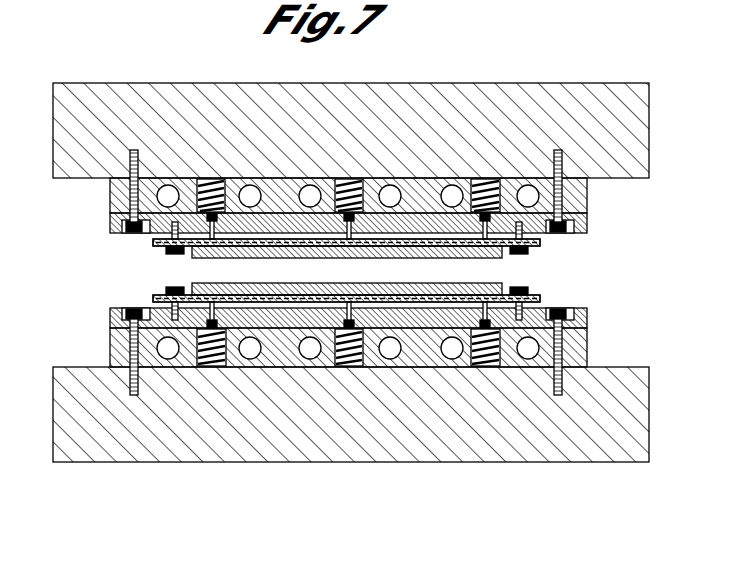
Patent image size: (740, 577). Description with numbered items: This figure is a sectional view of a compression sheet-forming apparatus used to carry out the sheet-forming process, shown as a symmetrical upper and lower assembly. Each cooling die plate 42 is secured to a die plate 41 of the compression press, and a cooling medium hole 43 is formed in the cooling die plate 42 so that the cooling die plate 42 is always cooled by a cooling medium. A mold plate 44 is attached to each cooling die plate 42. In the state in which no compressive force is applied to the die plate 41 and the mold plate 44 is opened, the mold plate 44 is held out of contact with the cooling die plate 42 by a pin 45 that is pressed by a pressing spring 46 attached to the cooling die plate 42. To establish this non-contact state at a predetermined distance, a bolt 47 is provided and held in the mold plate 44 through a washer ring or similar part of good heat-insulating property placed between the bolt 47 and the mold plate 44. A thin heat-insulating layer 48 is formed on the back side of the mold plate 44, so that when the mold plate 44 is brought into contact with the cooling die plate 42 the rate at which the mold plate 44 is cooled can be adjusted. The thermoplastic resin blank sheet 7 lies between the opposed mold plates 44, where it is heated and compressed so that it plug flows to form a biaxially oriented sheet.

The die plate 41 is at (538, 83).
The cooling die plate 42 is at (600, 197).
The cooling medium hole 43 is at (162, 186).
The mold plate 44 is at (488, 252).
The pin 45 is at (170, 255).
The pressing spring 46 is at (352, 180).
The bolt 47 is at (592, 222).
The thin heat-insulating layer 48 is at (153, 242).
The thermoplastic resin blank sheet 7 is at (528, 290).